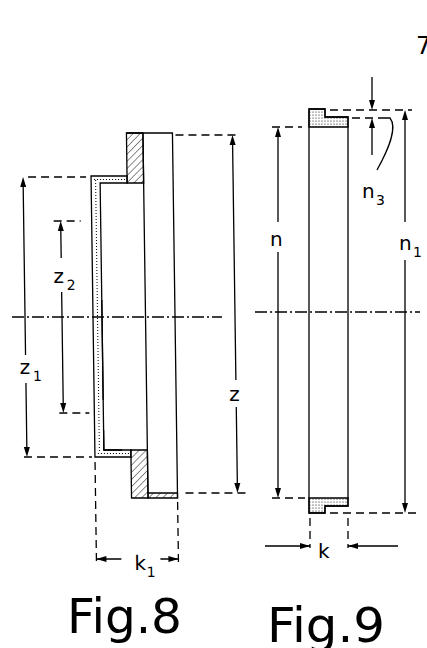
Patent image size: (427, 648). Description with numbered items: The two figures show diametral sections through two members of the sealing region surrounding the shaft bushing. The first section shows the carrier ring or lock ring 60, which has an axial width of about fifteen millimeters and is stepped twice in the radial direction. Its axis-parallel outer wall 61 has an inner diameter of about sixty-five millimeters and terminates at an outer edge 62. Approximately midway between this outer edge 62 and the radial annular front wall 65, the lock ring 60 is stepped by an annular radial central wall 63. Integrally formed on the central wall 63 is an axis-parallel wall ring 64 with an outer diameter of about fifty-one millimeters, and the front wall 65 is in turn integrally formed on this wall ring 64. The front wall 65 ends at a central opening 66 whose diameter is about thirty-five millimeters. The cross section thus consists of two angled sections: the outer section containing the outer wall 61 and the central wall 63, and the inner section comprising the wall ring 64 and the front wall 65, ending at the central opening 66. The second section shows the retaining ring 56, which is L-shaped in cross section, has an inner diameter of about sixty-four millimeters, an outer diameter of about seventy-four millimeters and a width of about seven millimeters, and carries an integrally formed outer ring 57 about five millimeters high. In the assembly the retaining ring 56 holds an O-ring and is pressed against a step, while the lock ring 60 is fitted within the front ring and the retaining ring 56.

In FIG. 8, the carrier ring or lock ring 60 is at (138, 74).
In FIG. 8, the outer wall 61 is at (160, 502).
In FIG. 8, the outer edge 62 is at (180, 496).
In FIG. 8, the radial central wall 63 is at (135, 184).
In FIG. 8, the wall ring 64 is at (107, 177).
In FIG. 8, the radial annular front wall 65 is at (103, 436).
In FIG. 8, the central opening 66 is at (97, 352).
In FIG. 9, the retaining ring 56 is at (327, 80).
In FIG. 9, the outer ring 57 is at (309, 506).